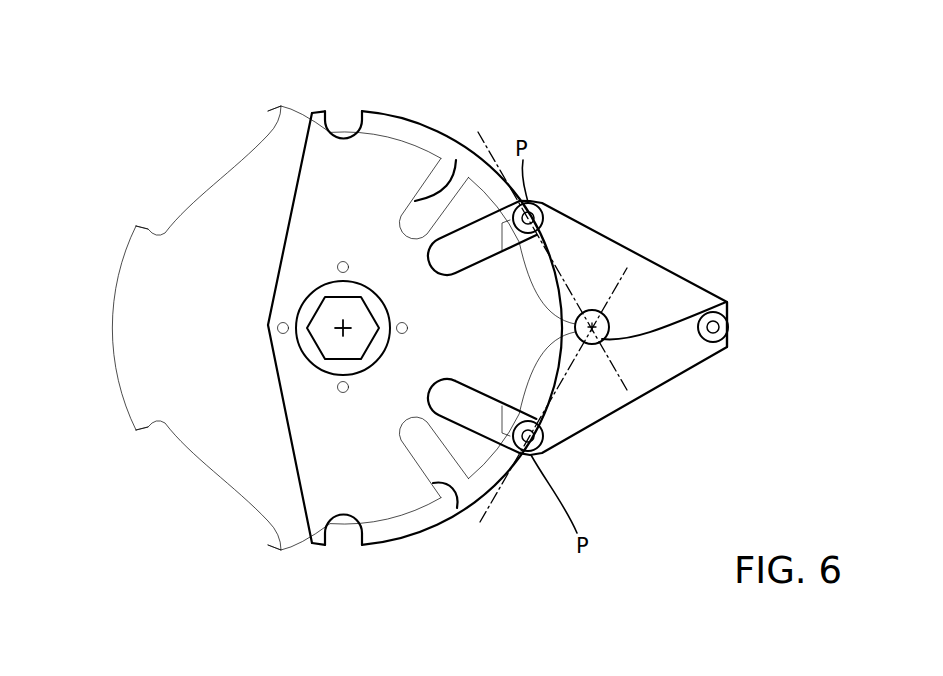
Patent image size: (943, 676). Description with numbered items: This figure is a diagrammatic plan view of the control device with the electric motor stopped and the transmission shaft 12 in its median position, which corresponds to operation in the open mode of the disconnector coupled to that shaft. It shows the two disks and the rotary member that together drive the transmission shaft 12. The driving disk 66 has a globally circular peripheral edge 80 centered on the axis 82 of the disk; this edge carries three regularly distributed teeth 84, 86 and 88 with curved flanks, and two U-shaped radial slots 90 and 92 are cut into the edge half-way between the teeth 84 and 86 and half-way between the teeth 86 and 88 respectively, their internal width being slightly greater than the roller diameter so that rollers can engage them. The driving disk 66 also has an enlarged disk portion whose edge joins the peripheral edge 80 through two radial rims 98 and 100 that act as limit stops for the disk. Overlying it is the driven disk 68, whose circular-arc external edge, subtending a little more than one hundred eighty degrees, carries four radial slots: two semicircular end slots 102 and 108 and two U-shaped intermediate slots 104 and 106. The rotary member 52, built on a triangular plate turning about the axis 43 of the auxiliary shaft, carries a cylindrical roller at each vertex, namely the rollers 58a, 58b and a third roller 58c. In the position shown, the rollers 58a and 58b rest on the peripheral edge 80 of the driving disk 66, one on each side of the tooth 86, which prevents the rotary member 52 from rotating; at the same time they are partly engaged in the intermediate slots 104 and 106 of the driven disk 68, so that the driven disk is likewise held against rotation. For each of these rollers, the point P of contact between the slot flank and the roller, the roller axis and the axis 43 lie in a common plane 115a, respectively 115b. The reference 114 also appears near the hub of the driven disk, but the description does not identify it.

The transmission shaft 12 is at (338, 350).
The axis 43 is at (607, 331).
The rotary member 52 is at (659, 244).
The roller 58a is at (534, 204).
The roller 58b is at (538, 451).
The pivot pin 58c is at (719, 342).
The driving disk 66 is at (193, 175).
The driven disk 68 is at (403, 102).
The peripheral edge 80 is at (557, 377).
The axis 82 is at (343, 325).
The tooth 84 is at (281, 106).
The tooth 86 is at (728, 303).
The tooth 88 is at (272, 552).
The radial slot 90 is at (456, 160).
The radial slot 92 is at (457, 508).
The radial rim 98 is at (147, 230).
The radial rim 100 is at (148, 426).
The end slot 102 is at (345, 112).
The intermediate slot 104 is at (466, 226).
The intermediate slot 106 is at (479, 434).
The end slot 108 is at (327, 546).
The fastener 114 is at (322, 356).
The common plane 115a is at (628, 392).
The common plane 115b is at (627, 268).